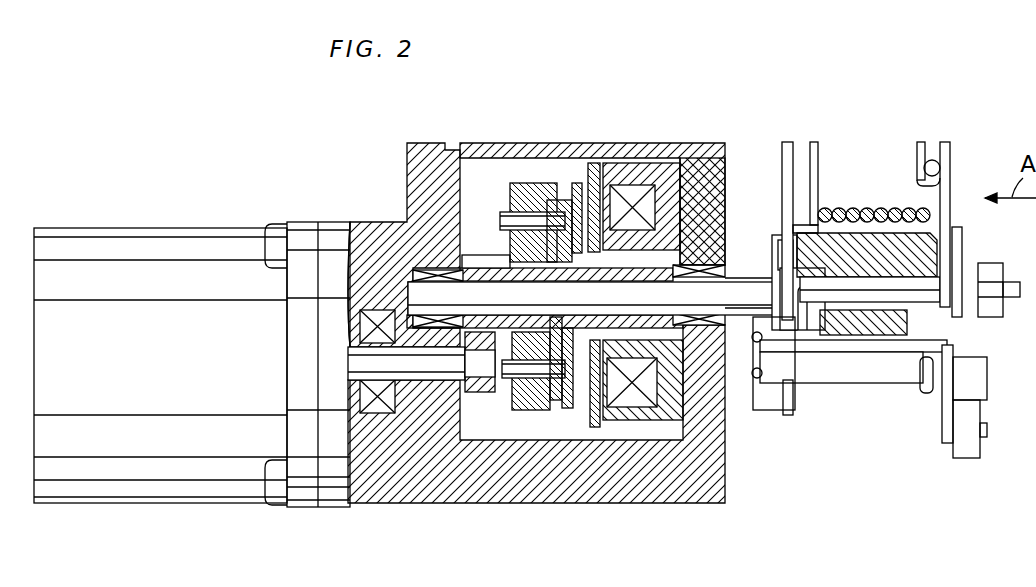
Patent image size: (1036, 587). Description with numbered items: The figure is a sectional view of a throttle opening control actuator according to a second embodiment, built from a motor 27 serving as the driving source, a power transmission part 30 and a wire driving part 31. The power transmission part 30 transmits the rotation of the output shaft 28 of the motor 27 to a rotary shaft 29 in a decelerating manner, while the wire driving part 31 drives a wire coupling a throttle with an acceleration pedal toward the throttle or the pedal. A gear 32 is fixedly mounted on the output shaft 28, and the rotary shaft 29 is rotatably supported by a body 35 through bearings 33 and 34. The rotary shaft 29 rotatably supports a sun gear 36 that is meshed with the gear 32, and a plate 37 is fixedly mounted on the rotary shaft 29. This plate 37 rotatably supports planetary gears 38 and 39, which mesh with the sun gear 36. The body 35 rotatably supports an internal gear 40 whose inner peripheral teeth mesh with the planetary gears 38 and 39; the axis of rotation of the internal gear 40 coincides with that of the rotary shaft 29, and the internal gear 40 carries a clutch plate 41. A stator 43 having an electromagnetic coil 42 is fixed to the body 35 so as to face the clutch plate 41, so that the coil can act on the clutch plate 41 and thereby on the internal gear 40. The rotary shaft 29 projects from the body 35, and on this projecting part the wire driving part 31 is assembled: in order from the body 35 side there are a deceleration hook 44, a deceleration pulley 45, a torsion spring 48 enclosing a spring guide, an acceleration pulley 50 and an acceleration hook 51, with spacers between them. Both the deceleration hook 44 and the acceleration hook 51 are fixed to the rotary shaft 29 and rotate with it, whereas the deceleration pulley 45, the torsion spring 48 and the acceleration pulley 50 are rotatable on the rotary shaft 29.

The motor 27 is at (122, 250).
The output shaft 28 is at (430, 367).
The rotary shaft 29 is at (407, 220).
The power transmission part 30 is at (590, 155).
The wire driving part 31 is at (872, 253).
The gear 32 is at (480, 397).
The bearing 33 is at (438, 292).
The bearing 34 is at (732, 263).
The body 35 is at (680, 487).
The sun gear 36 is at (488, 262).
The plate 37 is at (570, 417).
The planetary gear 38 is at (515, 183).
The planetary gear 39 is at (527, 405).
The internal gear 40 is at (572, 183).
The clutch plate 41 is at (597, 165).
The electromagnetic coil 42 is at (632, 190).
The stator 43 is at (688, 160).
The deceleration hook 44 is at (775, 287).
The deceleration pulley 45 is at (788, 143).
The torsion spring 48 is at (825, 212).
The acceleration pulley 50 is at (950, 143).
The acceleration hook 51 is at (958, 253).